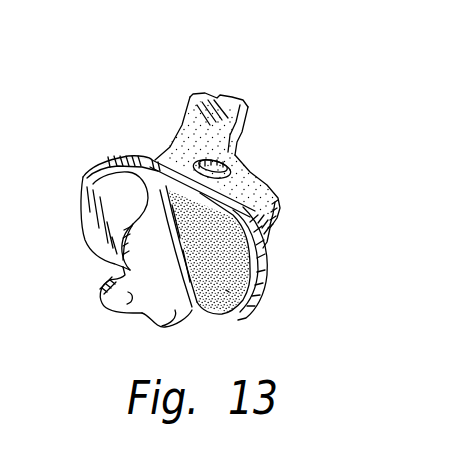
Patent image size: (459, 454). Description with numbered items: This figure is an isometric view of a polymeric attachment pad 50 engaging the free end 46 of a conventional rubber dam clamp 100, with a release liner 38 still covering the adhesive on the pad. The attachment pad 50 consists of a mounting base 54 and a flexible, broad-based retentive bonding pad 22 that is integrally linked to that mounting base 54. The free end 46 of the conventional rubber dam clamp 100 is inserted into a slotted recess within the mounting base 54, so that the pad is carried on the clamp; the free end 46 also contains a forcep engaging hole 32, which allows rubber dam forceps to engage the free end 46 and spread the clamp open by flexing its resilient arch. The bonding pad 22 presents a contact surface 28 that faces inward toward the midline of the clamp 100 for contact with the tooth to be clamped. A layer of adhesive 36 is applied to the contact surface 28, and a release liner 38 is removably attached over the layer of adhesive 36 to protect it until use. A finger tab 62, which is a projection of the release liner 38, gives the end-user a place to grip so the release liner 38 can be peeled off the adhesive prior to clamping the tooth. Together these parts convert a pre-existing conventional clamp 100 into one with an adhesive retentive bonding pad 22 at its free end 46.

The conventional rubber dam clamp 100 is at (195, 81).
The polymeric attachment pad 50 is at (89, 158).
The forcep engaging hole 32 is at (224, 171).
The free end 46 is at (268, 183).
The mounting base 54 is at (262, 243).
The bonding pad 22 is at (272, 256).
The layer of adhesive 36 is at (247, 282).
The contact surface 28 is at (228, 290).
The finger tab 62 is at (124, 304).
The release liner 38 is at (166, 322).